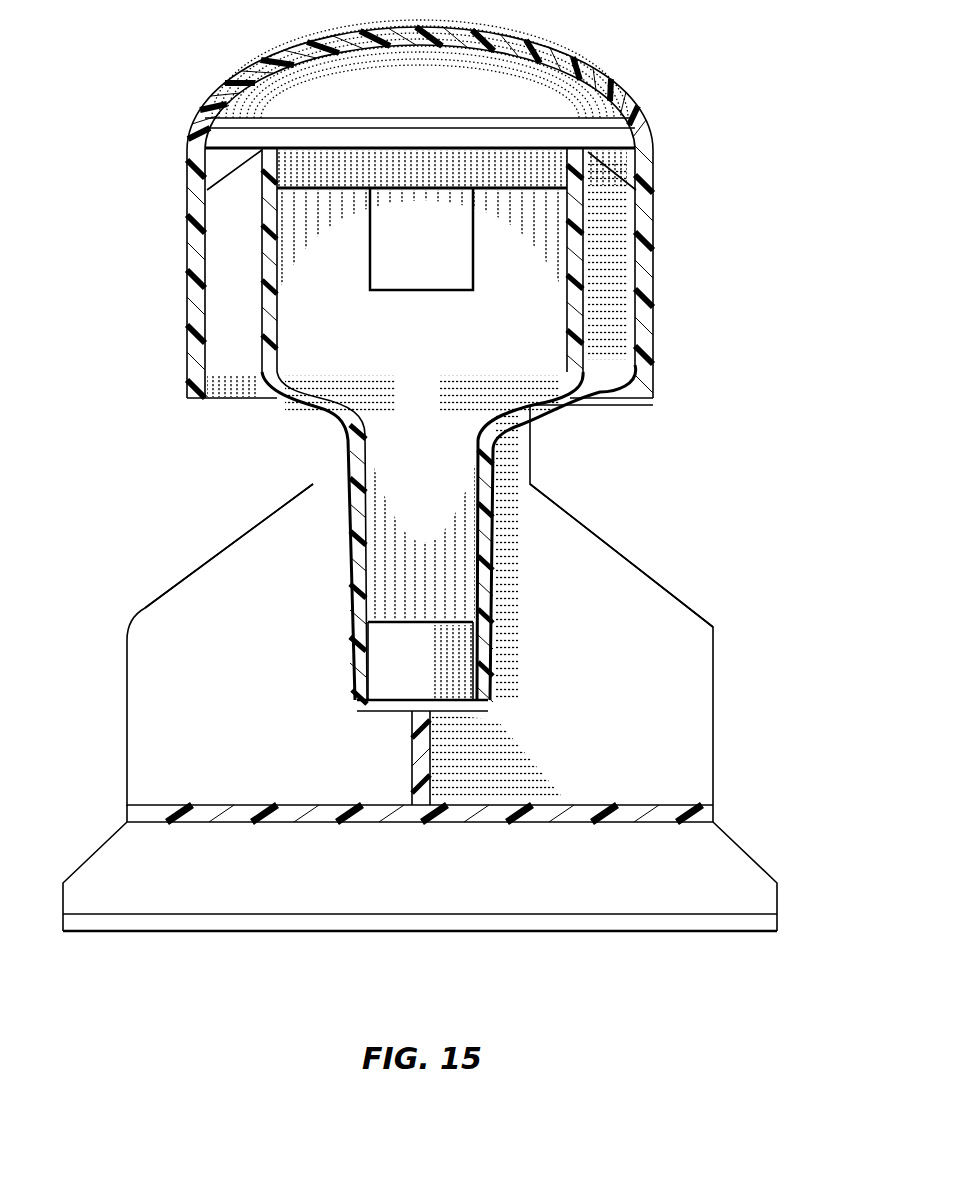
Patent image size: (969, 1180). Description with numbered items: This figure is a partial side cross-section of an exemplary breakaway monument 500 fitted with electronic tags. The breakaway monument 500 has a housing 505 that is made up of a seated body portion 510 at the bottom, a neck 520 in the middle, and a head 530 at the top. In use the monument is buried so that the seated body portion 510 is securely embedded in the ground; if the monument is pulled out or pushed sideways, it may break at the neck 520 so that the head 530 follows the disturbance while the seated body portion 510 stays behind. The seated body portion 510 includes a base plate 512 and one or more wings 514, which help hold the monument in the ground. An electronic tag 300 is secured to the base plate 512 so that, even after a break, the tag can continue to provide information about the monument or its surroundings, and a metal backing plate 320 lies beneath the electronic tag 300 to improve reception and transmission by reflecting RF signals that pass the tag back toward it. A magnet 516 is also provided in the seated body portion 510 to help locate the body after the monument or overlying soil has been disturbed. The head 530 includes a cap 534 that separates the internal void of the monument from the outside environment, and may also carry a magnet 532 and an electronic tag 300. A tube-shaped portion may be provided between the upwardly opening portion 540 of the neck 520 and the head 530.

The electronic tag 300 is at (548, 138).
The metal backing plate 320 is at (732, 935).
The breakaway monument 500 is at (700, 67).
The housing 505 is at (655, 458).
The seated body portion 510 is at (313, 484).
The base plate 512 is at (288, 823).
The wings 514 is at (240, 587).
The magnet 516 is at (388, 658).
The neck 520 is at (313, 484).
The head 530 is at (373, 26).
The magnet 532 is at (422, 262).
The cap 534 is at (653, 318).
The upwardly opening portion 540 is at (585, 242).